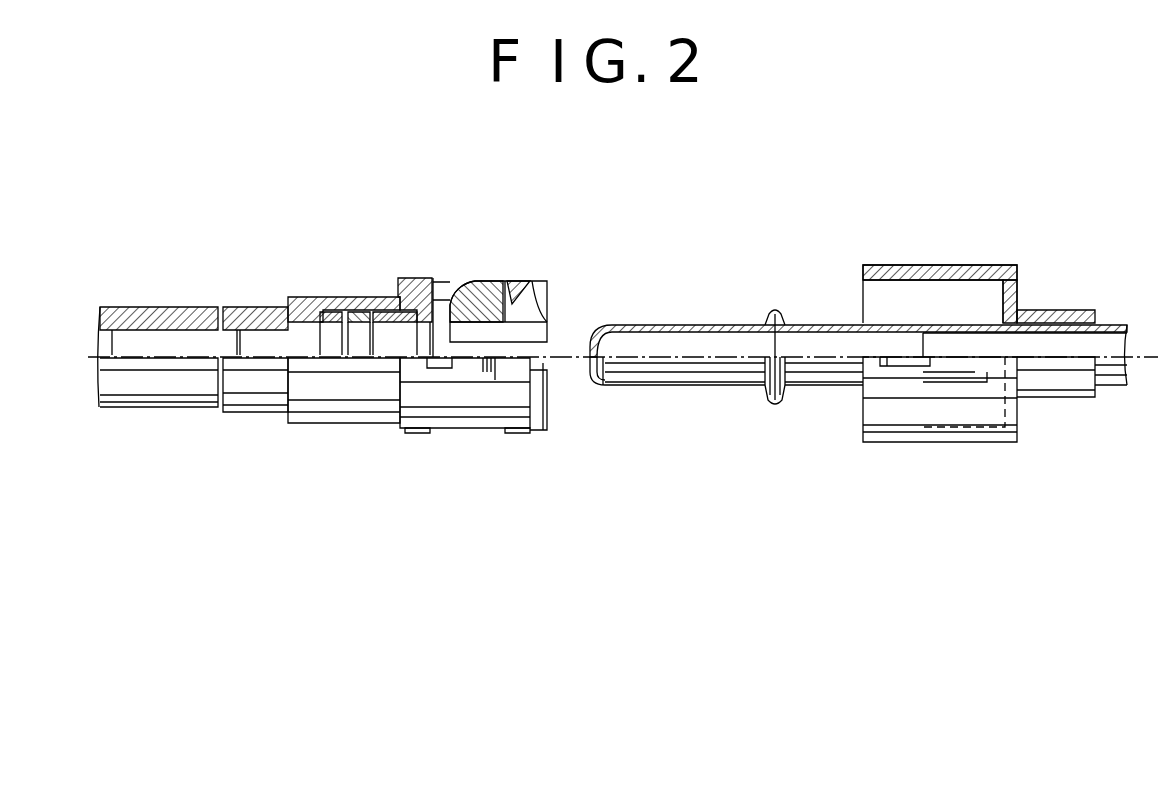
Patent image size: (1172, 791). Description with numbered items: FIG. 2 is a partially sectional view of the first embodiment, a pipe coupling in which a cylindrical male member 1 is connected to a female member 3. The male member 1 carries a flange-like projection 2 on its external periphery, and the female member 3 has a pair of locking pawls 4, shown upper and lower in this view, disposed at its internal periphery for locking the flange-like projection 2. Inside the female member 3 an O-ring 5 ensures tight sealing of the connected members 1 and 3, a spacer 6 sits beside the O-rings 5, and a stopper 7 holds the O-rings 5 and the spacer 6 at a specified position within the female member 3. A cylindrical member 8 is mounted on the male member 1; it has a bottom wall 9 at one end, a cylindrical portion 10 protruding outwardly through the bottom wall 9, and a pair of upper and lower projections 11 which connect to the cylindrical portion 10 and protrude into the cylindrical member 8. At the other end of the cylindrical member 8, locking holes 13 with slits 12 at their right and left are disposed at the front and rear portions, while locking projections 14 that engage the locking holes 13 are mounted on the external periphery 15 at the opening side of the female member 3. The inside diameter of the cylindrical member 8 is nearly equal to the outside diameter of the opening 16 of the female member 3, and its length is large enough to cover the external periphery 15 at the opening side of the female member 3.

The cylindrical male member 1 is at (800, 324).
The flange-like projection 2 is at (757, 386).
The female member 3 is at (321, 424).
The locking pawls 4 is at (483, 288).
The O-ring 5 is at (326, 297).
The spacer 6 is at (341, 300).
The stopper 7 is at (386, 296).
The cylindrical member 8 is at (975, 420).
The bottom wall 9 is at (1013, 288).
The cylindrical portion 10 is at (1082, 310).
The projections 11 is at (953, 340).
The slits 12 is at (905, 384).
The locking holes 13 is at (890, 366).
The locking projections 14 is at (437, 369).
The external periphery 15 is at (470, 416).
The opening 16 is at (543, 363).